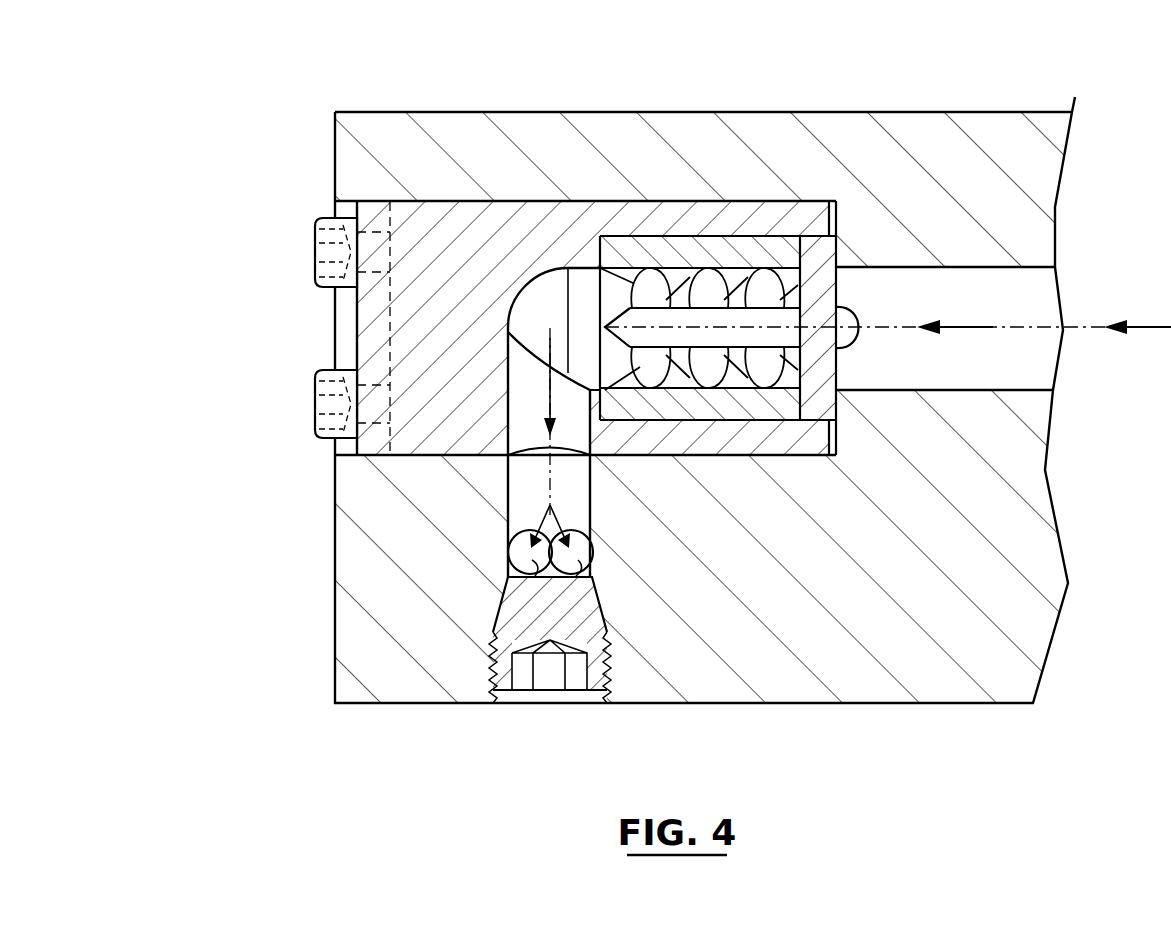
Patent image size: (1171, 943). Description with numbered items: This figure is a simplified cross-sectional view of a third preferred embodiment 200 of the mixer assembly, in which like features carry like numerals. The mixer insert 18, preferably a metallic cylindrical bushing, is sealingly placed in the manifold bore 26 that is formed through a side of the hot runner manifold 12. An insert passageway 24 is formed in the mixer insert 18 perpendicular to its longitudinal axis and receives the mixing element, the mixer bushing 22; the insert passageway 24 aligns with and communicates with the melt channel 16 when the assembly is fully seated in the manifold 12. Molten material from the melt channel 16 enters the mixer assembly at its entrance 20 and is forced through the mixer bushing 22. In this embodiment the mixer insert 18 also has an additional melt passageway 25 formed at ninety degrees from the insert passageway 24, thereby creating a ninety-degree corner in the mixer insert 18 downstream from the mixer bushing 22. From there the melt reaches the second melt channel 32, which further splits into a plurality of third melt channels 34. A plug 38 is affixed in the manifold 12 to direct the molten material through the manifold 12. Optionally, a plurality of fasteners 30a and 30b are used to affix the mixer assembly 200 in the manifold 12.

The hot runner manifold 12 is at (703, 130).
The melt channel 16 is at (966, 311).
The mixer insert 18 is at (470, 222).
The entrance of the mixer assembly 20 is at (822, 250).
The mixer bushing 22 is at (740, 245).
The insert passageway 24 is at (615, 237).
The additional melt passageway 25 is at (513, 413).
The manifold bore 26 is at (537, 205).
The fastener 30a is at (315, 238).
The fastener 30b is at (315, 423).
The second melt channel 32 is at (551, 493).
The third melt channels 34 is at (545, 583).
The plug 38 is at (523, 680).
The third preferred embodiment 200 is at (252, 325).